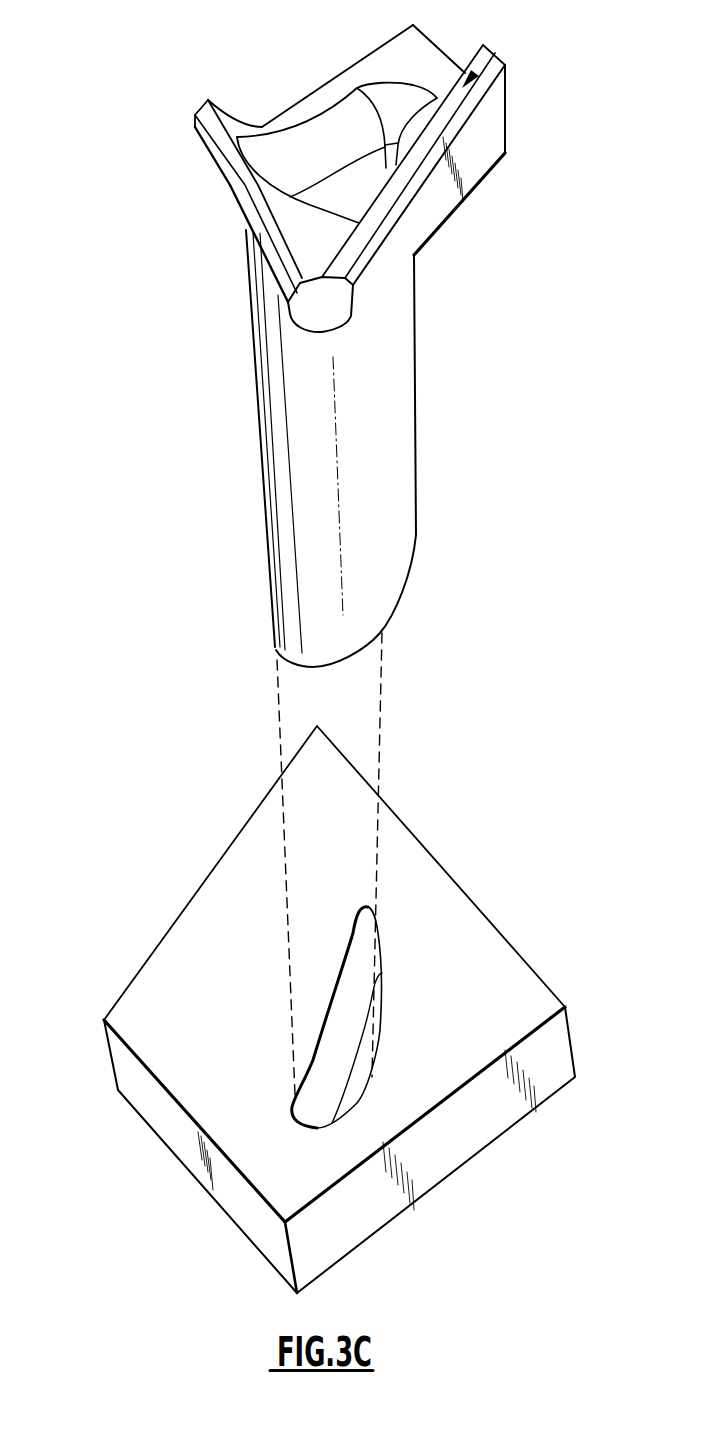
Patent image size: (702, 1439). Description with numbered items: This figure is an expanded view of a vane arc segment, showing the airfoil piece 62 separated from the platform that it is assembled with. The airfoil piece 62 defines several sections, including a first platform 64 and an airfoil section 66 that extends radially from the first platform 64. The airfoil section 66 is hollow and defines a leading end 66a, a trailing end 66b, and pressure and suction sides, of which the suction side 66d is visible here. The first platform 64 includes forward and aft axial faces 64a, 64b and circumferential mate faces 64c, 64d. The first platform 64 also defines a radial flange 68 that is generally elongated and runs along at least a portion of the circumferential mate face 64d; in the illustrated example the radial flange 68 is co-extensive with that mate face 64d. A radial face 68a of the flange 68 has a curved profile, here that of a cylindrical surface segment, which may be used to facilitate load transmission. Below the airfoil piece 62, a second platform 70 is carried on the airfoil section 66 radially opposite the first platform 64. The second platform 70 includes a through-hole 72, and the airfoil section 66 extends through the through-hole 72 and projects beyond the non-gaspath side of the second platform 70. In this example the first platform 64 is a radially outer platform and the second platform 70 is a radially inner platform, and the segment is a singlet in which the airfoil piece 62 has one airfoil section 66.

The airfoil piece 62 is at (222, 463).
The first platform 64 is at (280, 223).
The forward axial face 64a is at (228, 157).
The aft axial face 64b is at (437, 43).
The circumferential mate face 64c is at (310, 102).
The circumferential mate face 64d is at (480, 137).
The airfoil section 66 is at (287, 387).
The leading end 66a is at (273, 578).
The trailing end 66b is at (418, 397).
The suction side 66d is at (307, 350).
The radial flange 68 is at (483, 45).
The radial face 68a is at (383, 197).
The second platform 70 is at (110, 1052).
The through-hole 72 is at (380, 1046).